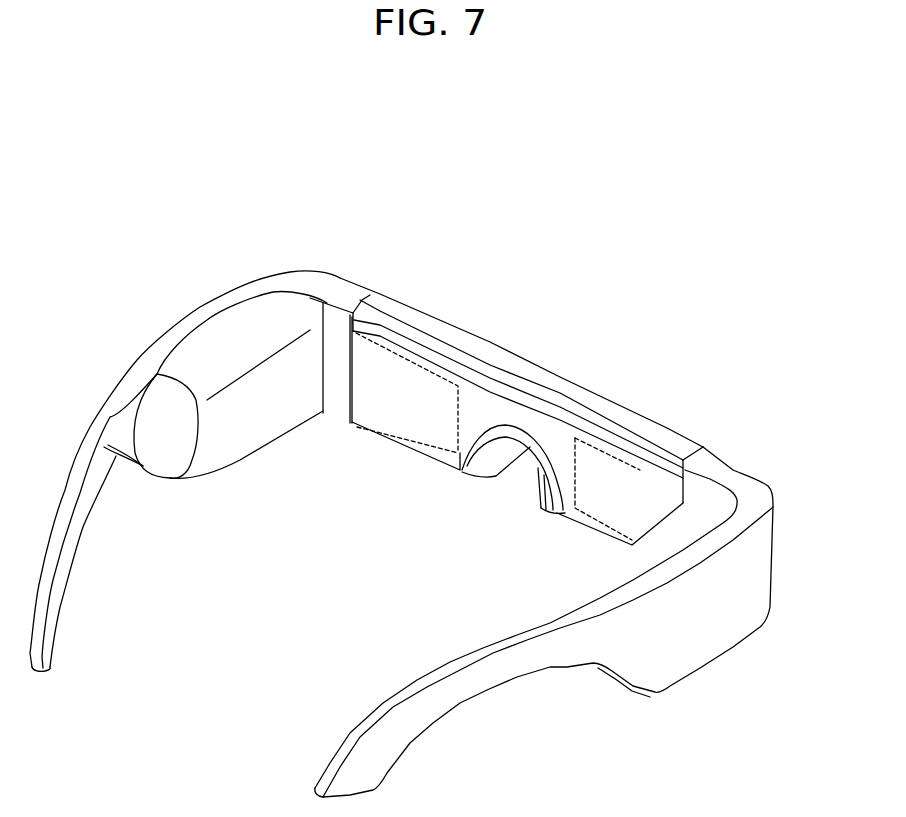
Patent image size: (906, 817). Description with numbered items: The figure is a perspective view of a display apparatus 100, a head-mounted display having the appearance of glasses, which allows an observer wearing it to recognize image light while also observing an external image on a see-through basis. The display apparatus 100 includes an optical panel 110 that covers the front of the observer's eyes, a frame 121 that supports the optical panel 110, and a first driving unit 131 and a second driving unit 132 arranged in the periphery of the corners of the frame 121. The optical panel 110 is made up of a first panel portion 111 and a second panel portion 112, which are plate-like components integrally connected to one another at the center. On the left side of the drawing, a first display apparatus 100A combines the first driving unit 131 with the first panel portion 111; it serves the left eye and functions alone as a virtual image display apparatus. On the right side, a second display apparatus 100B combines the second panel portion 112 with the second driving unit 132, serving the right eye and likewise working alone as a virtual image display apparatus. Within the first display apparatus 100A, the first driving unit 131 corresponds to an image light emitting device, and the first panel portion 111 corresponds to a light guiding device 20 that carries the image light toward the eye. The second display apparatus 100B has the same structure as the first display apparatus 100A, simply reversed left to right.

The display apparatus 100 is at (745, 247).
The first display apparatus 100A is at (388, 264).
The second display apparatus 100B is at (707, 396).
The optical panel 110 is at (521, 420).
The first panel portion 111 is at (380, 433).
The second panel portion 112 is at (577, 519).
The frame 121 is at (338, 292).
The first driving unit 131 is at (220, 355).
The second driving unit 132 is at (710, 508).
The light guiding device 20 is at (414, 375).